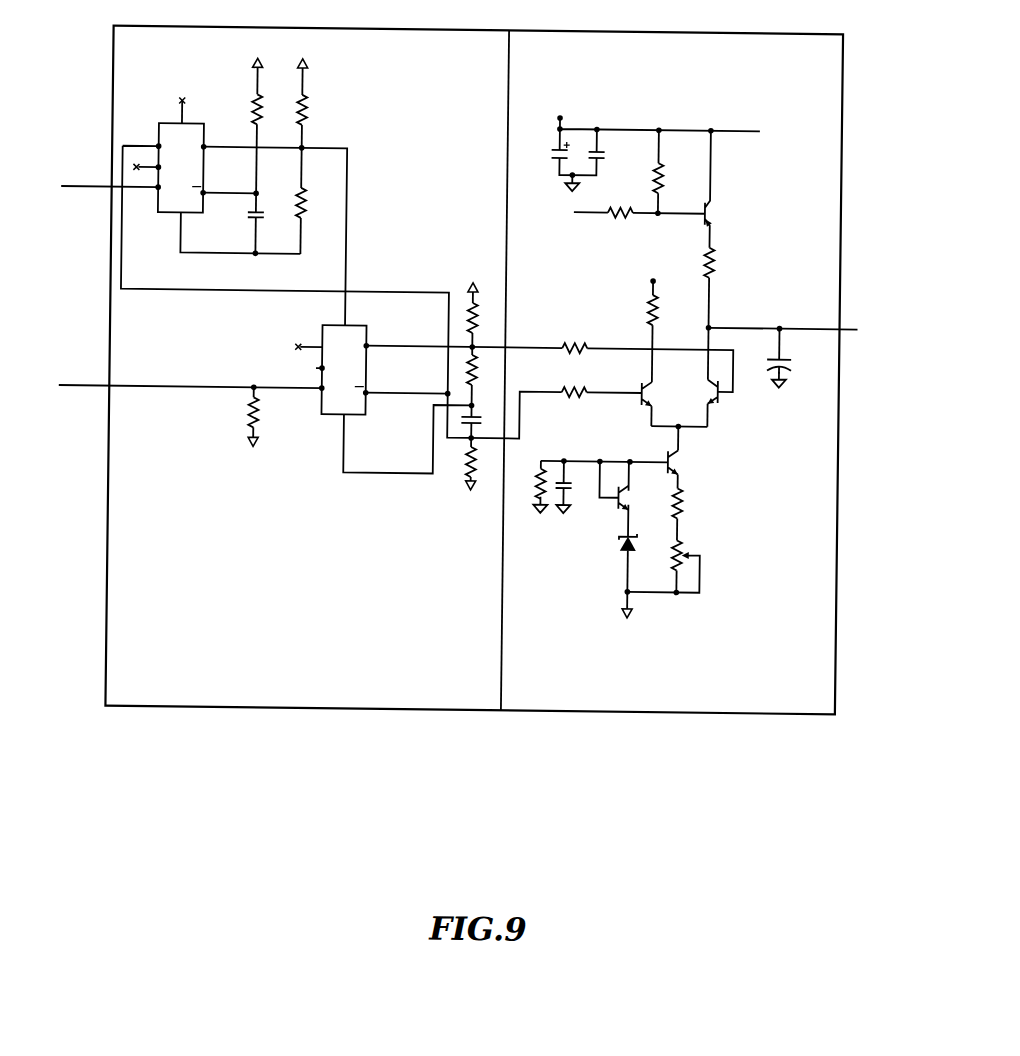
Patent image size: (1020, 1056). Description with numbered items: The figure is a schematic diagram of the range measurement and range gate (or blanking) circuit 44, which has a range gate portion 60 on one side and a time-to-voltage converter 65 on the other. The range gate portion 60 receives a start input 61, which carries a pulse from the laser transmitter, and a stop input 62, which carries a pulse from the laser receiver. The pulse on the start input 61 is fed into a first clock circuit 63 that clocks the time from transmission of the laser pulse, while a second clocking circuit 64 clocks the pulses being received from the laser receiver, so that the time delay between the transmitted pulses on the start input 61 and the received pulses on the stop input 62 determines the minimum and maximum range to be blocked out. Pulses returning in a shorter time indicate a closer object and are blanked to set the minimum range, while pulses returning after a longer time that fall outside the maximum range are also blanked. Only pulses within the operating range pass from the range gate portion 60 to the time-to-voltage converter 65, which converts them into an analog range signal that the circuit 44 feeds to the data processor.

The range measurement and range gate (or blanking) circuit 44 is at (100, 565).
The range gate portion 60 is at (297, 697).
The start input 61 is at (79, 195).
The stop input 62 is at (79, 394).
The first clock circuit 63 is at (156, 127).
The second clocking circuit 64 is at (323, 416).
The time-to-voltage converter 65 is at (561, 698).